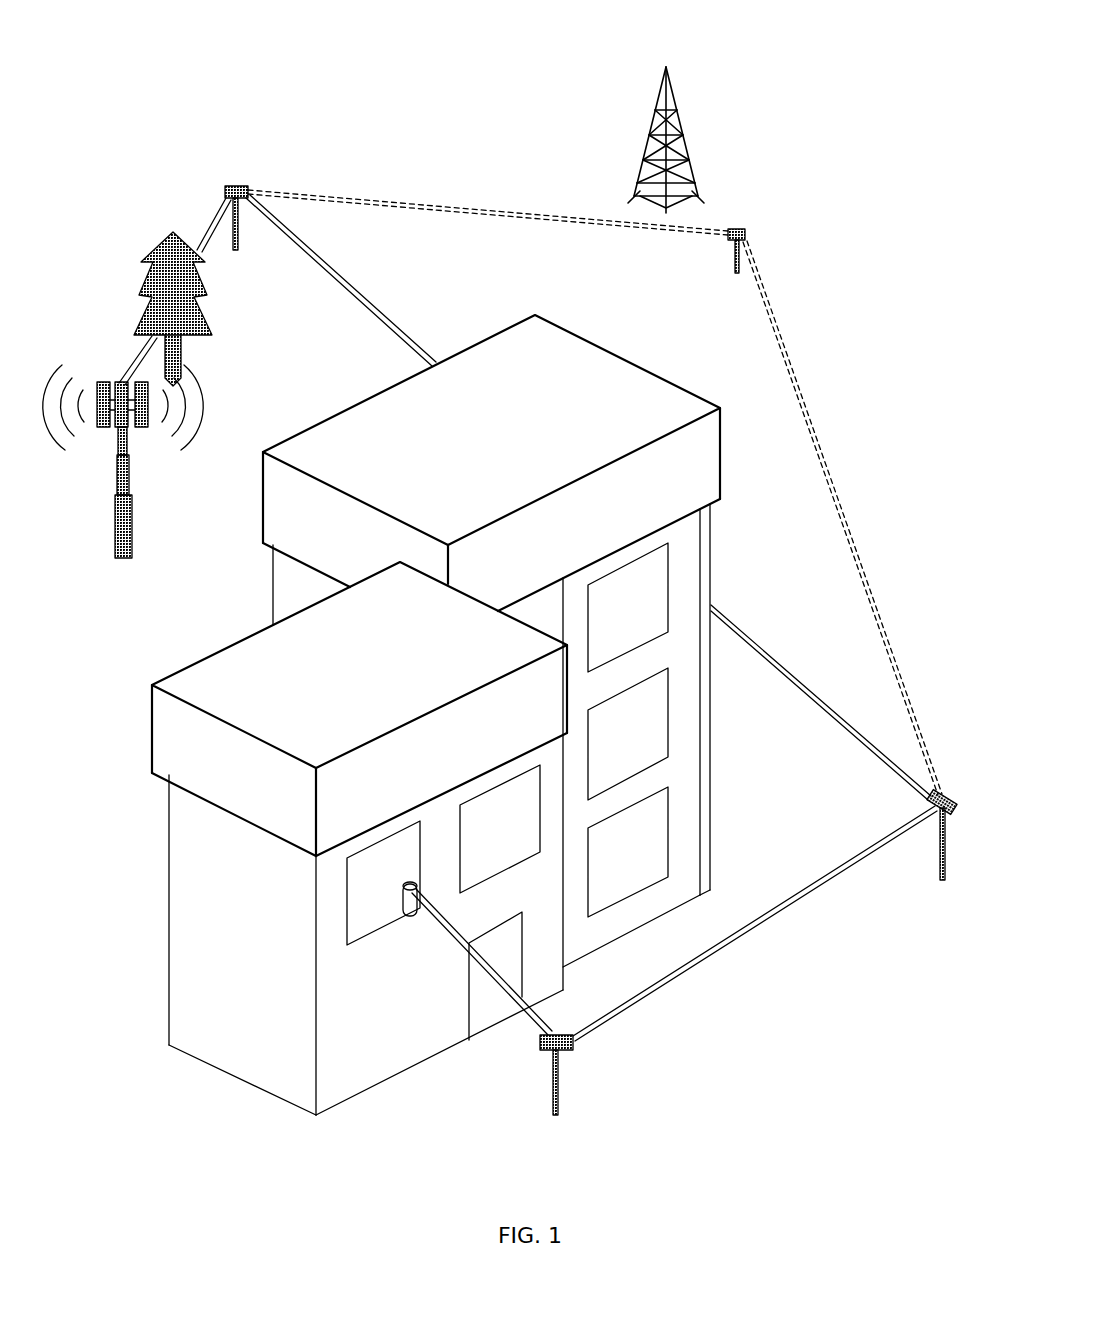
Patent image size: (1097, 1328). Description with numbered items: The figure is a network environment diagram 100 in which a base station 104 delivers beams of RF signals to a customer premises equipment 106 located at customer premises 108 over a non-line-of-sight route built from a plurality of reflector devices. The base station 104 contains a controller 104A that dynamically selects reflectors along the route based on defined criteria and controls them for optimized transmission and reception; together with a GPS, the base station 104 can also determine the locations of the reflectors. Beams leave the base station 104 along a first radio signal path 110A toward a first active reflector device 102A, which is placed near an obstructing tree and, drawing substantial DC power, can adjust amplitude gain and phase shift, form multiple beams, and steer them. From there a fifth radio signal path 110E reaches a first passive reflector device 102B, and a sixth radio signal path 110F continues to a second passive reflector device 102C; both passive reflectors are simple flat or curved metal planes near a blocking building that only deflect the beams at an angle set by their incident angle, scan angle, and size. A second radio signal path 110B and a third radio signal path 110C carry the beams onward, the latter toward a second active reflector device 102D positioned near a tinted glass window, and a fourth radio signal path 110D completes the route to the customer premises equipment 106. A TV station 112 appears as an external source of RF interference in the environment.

The network environment diagram 100 is at (858, 67).
The first active reflector device 102A is at (240, 186).
The first passive reflector device 102B is at (741, 228).
The second passive reflector device 102C is at (934, 814).
The second active reflector device 102D is at (540, 1050).
The base station 104 is at (115, 527).
The controller 104A is at (122, 418).
The customer premises equipment (CPE) 106 is at (405, 908).
The customer premises 108 is at (265, 548).
The first radio signal path 110A is at (203, 230).
The second radio signal path 110B is at (770, 658).
The third radio signal path 110C is at (763, 922).
The fourth radio signal path 110D is at (500, 990).
The fifth radio signal path 110E is at (543, 212).
The sixth radio signal path 110F is at (843, 492).
The TV station 112 is at (680, 138).